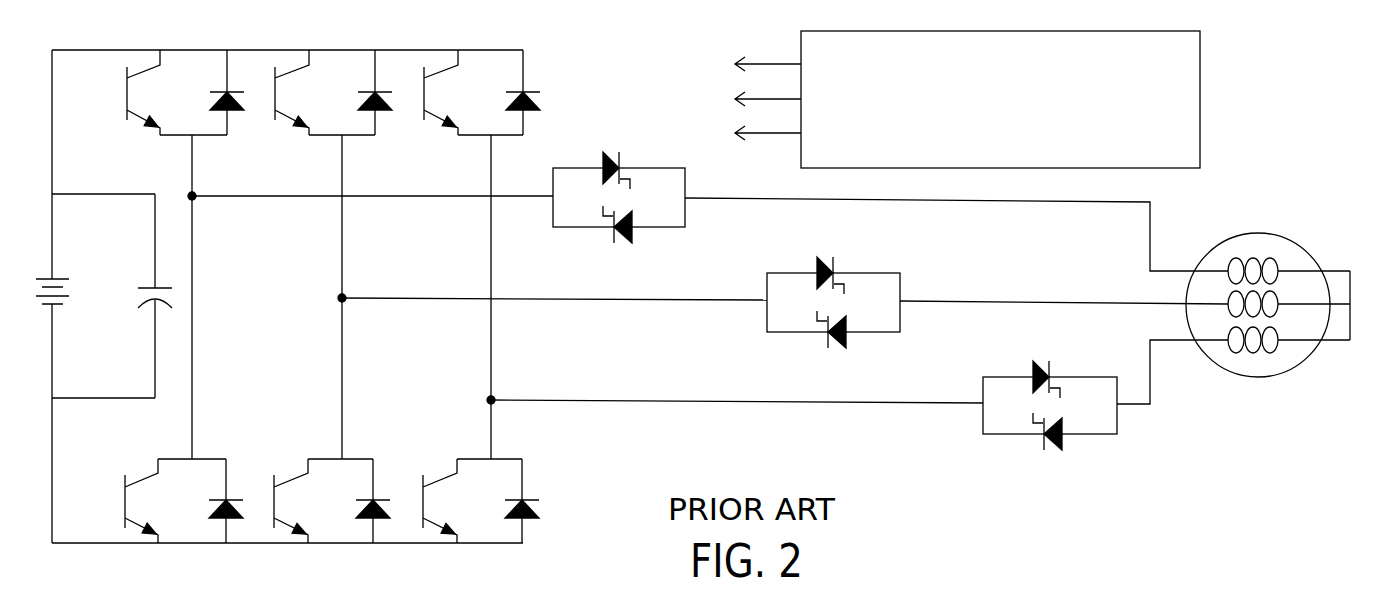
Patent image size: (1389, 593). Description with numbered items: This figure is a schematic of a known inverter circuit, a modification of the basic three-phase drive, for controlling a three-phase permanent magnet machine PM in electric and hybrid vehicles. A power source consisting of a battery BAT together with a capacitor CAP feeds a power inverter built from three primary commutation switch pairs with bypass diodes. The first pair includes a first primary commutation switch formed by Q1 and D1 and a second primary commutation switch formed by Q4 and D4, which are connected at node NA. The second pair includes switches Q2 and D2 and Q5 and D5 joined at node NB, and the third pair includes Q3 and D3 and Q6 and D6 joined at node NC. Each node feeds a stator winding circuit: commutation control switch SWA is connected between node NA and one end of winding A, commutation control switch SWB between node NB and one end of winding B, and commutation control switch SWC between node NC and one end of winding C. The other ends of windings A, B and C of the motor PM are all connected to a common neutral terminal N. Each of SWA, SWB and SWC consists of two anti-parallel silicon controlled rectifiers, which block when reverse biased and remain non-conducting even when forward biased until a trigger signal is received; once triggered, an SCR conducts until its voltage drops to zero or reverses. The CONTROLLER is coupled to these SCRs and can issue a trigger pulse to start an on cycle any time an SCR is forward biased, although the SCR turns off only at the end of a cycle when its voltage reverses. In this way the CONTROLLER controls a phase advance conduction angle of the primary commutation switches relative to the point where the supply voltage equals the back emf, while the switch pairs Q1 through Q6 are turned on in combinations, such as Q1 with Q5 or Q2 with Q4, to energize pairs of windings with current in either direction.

The primary commutation switch Q1 is at (176, 80).
The primary commutation switch Q2 is at (325, 80).
The primary commutation switch Q3 is at (473, 80).
The primary commutation switch Q4 is at (175, 515).
The primary commutation switch Q5 is at (323, 515).
The primary commutation switch Q6 is at (472, 515).
The bypass diode D1 is at (226, 80).
The bypass diode D2 is at (375, 80).
The bypass diode D3 is at (523, 80).
The bypass diode D4 is at (225, 515).
The bypass diode D5 is at (373, 515).
The bypass diode D6 is at (522, 515).
The node NA is at (194, 198).
The node NB is at (344, 300).
The node NC is at (493, 402).
The battery BAT is at (95, 296).
The capacitor CAP is at (139, 296).
The commutation control switch SWA is at (619, 190).
The commutation control switch SWB is at (833, 296).
The commutation control switch SWC is at (1050, 398).
The stator winding A is at (1017, 241).
The stator winding B is at (1125, 298).
The stator winding C is at (1233, 365).
The neutral terminal N is at (1362, 305).
The permanent magnet motor PM is at (1258, 280).
The controller CONTROLLER is at (967, 99).